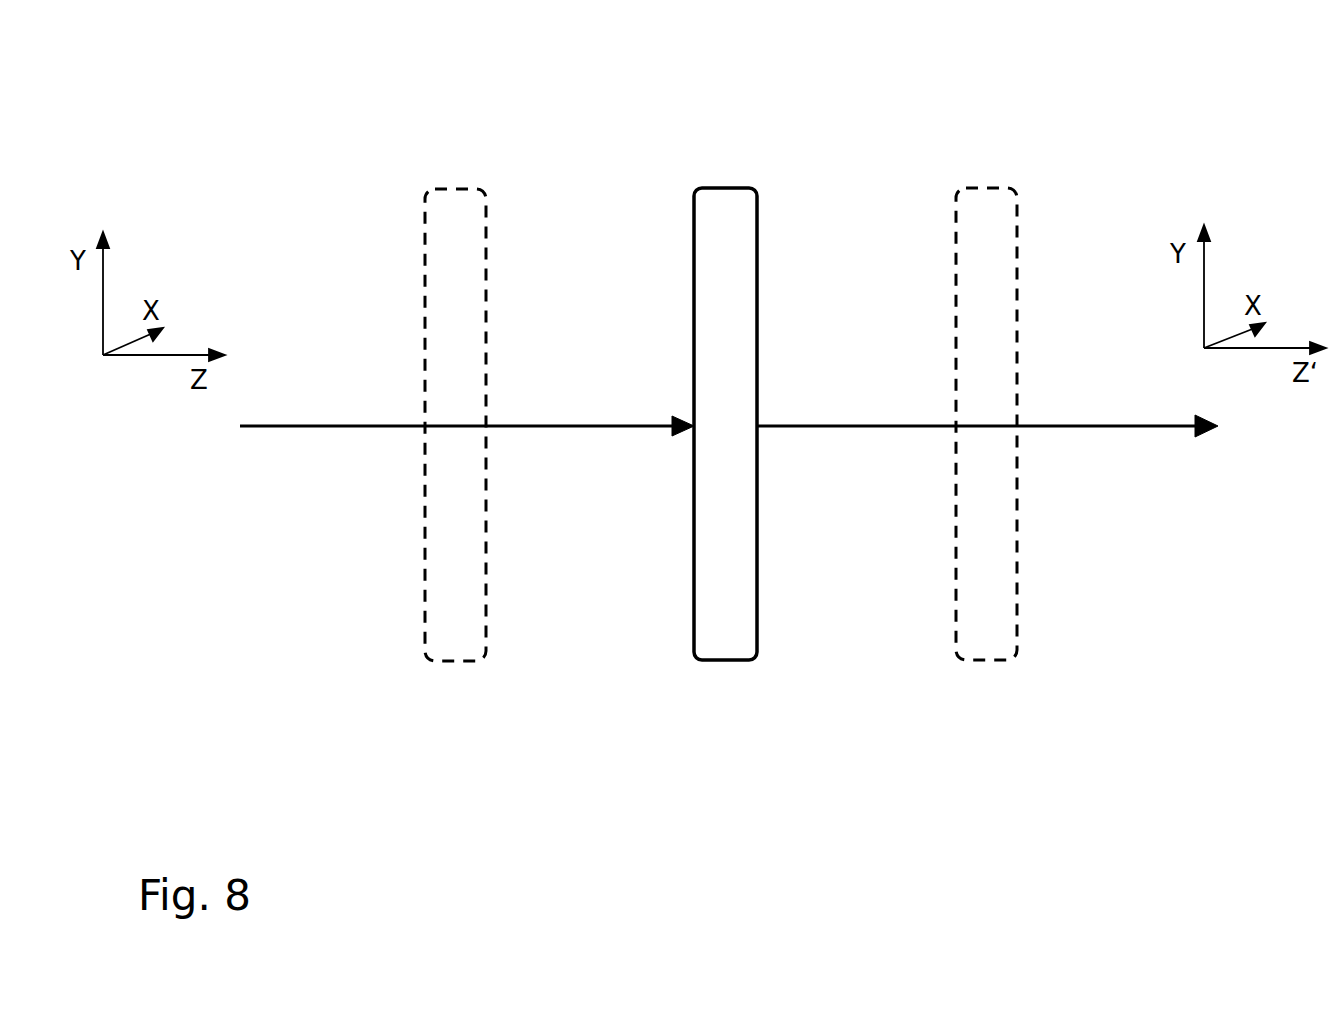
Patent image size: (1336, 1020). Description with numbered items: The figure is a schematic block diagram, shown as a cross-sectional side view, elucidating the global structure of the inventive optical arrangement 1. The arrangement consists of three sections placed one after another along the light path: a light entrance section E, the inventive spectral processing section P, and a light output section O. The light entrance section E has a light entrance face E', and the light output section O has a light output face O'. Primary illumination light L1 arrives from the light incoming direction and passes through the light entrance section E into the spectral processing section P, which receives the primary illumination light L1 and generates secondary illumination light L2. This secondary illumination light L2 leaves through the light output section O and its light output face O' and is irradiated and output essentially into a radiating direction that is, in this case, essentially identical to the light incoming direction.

The optical arrangement 1 is at (252, 124).
The light entrance section E is at (455, 375).
The light entrance face E' is at (385, 195).
The spectral processing section P is at (728, 188).
The light output section O is at (986, 374).
The light output face O' is at (1061, 195).
The primary illumination light L1 is at (305, 427).
The secondary illumination light L2 is at (847, 425).